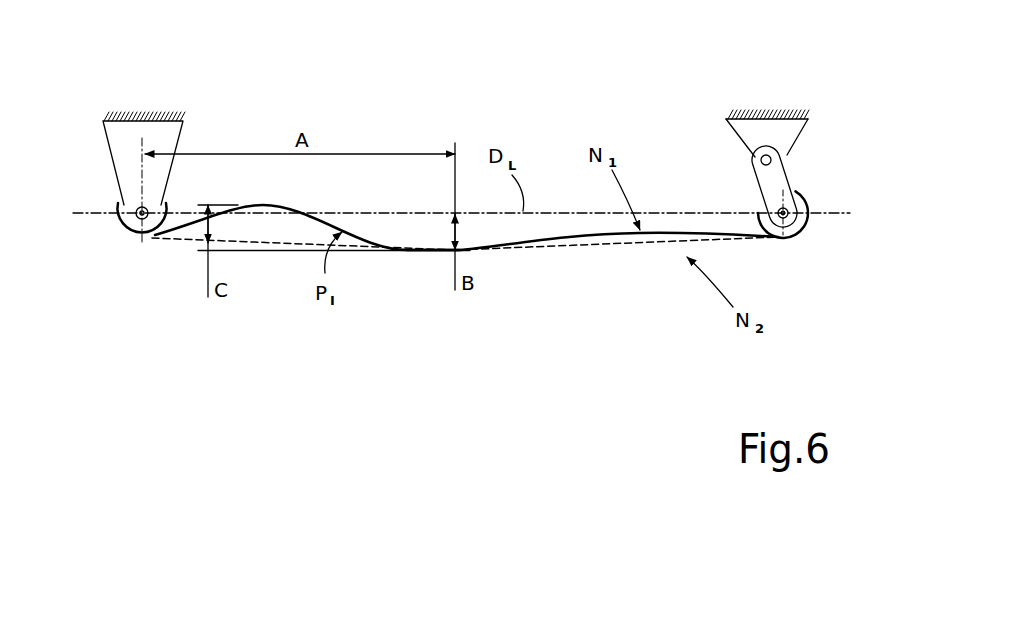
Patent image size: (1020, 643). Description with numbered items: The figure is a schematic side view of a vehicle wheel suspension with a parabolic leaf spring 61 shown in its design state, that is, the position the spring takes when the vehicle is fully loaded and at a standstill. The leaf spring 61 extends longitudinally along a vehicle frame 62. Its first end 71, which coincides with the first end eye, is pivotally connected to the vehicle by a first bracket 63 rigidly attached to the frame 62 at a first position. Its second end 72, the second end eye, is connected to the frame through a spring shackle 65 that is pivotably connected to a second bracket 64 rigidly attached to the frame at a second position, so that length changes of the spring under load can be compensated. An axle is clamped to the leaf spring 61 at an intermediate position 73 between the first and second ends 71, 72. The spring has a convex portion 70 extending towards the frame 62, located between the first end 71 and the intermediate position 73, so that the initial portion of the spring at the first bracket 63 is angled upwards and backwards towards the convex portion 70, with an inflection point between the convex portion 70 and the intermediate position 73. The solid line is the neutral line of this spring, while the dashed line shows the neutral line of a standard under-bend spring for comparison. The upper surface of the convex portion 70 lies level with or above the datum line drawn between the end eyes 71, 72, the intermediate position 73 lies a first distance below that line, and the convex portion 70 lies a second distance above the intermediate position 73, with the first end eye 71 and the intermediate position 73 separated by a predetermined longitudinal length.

The leaf spring 61 is at (605, 243).
The vehicle frame 62 is at (764, 98).
The first bracket 63 is at (120, 148).
The second bracket 64 is at (787, 132).
The spring shackle 65 is at (777, 182).
The convex portion 70 is at (270, 205).
The first end 71 is at (143, 223).
The second end 72 is at (787, 217).
The intermediate position 73 is at (453, 252).